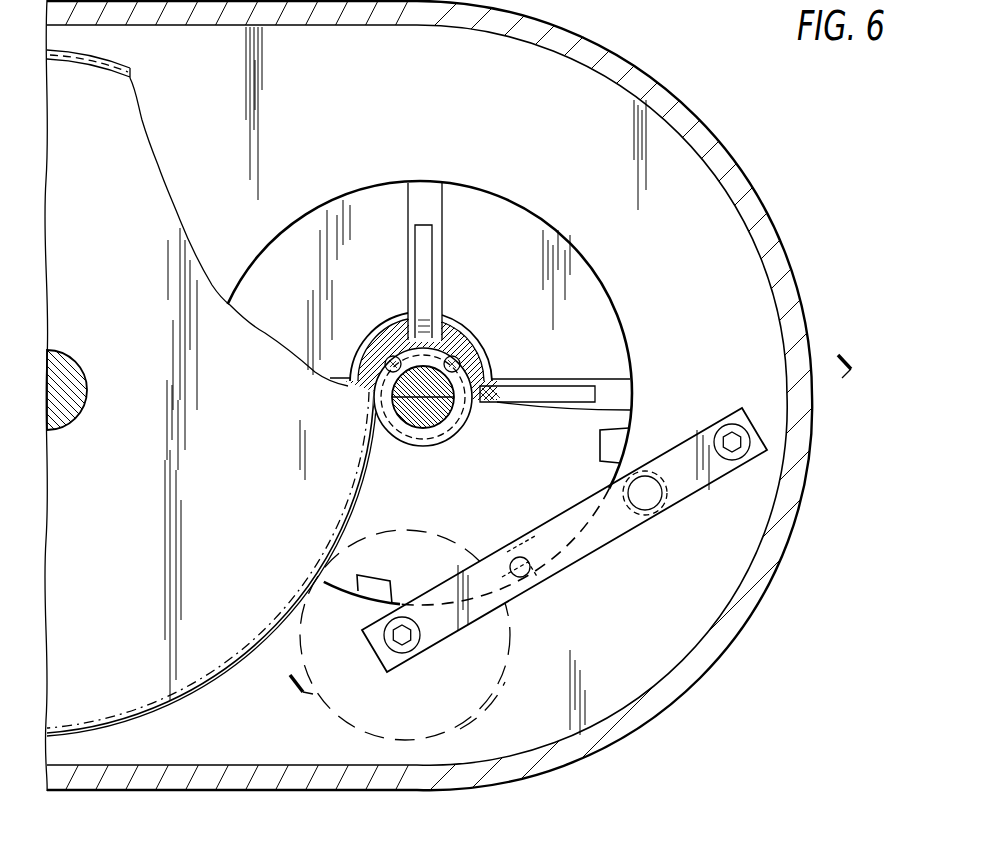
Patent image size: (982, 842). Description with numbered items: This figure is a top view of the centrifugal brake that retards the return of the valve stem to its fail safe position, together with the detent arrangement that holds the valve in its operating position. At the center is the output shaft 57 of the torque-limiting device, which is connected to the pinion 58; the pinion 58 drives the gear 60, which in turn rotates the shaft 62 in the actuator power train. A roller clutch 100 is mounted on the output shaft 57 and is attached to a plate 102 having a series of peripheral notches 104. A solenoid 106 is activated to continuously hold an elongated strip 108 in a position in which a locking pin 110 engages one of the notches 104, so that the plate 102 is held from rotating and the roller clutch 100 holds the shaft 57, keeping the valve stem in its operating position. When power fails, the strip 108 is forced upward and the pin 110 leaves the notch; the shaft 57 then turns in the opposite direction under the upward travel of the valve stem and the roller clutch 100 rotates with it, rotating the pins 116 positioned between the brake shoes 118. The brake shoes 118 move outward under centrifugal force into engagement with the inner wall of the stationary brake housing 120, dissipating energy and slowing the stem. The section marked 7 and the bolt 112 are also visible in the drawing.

The section line 7- 7 is at (563, 512).
The output shaft 57 is at (445, 418).
The pinion 58 is at (373, 454).
The gear 60 is at (271, 452).
The shaft 62 is at (85, 386).
The roller clutch 100 is at (478, 338).
The plate 102 is at (447, 551).
The peripheral notches 104 is at (628, 445).
The solenoid 106 is at (488, 703).
The elongated strip 108 is at (612, 528).
The locking pin 110 is at (520, 573).
The bolt 112 is at (737, 460).
The pins 116 is at (425, 230).
The brake shoes 118 is at (286, 250).
The brake housing 120 is at (366, 177).